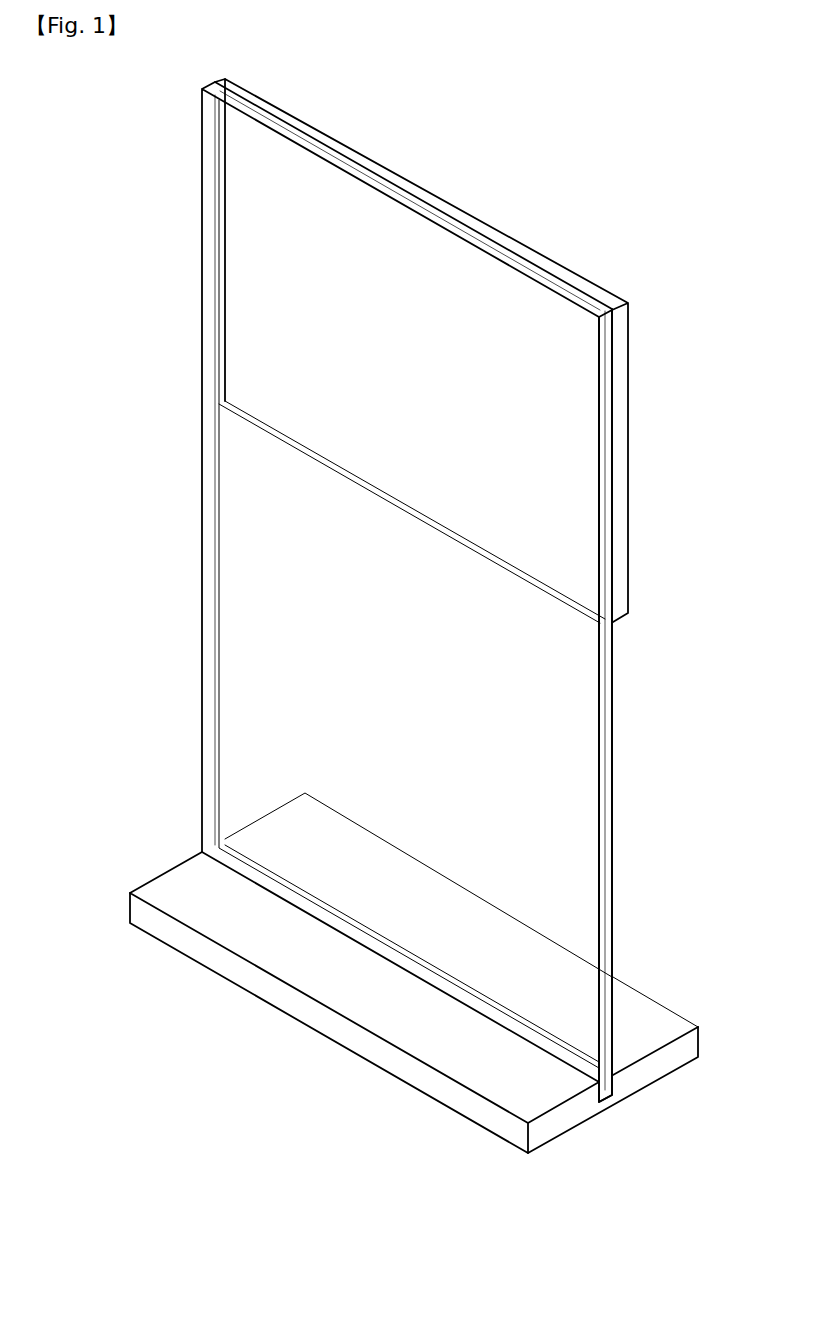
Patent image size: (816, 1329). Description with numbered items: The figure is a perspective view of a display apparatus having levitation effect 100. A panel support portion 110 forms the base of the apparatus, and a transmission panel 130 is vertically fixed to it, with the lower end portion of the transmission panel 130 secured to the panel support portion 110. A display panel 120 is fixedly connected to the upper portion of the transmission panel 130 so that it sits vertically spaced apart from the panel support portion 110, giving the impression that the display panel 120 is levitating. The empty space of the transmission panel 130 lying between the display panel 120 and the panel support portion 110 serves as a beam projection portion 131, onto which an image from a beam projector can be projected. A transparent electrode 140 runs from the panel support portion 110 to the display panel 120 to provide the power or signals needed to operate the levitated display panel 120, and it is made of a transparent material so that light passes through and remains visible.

The display apparatus having levitation effect 100 is at (103, 200).
The panel support portion 110 is at (286, 952).
The display panel 120 is at (455, 287).
The transmission panel 130 is at (202, 470).
The beam projection portion 131 is at (323, 656).
The transparent electrode 140 is at (618, 818).